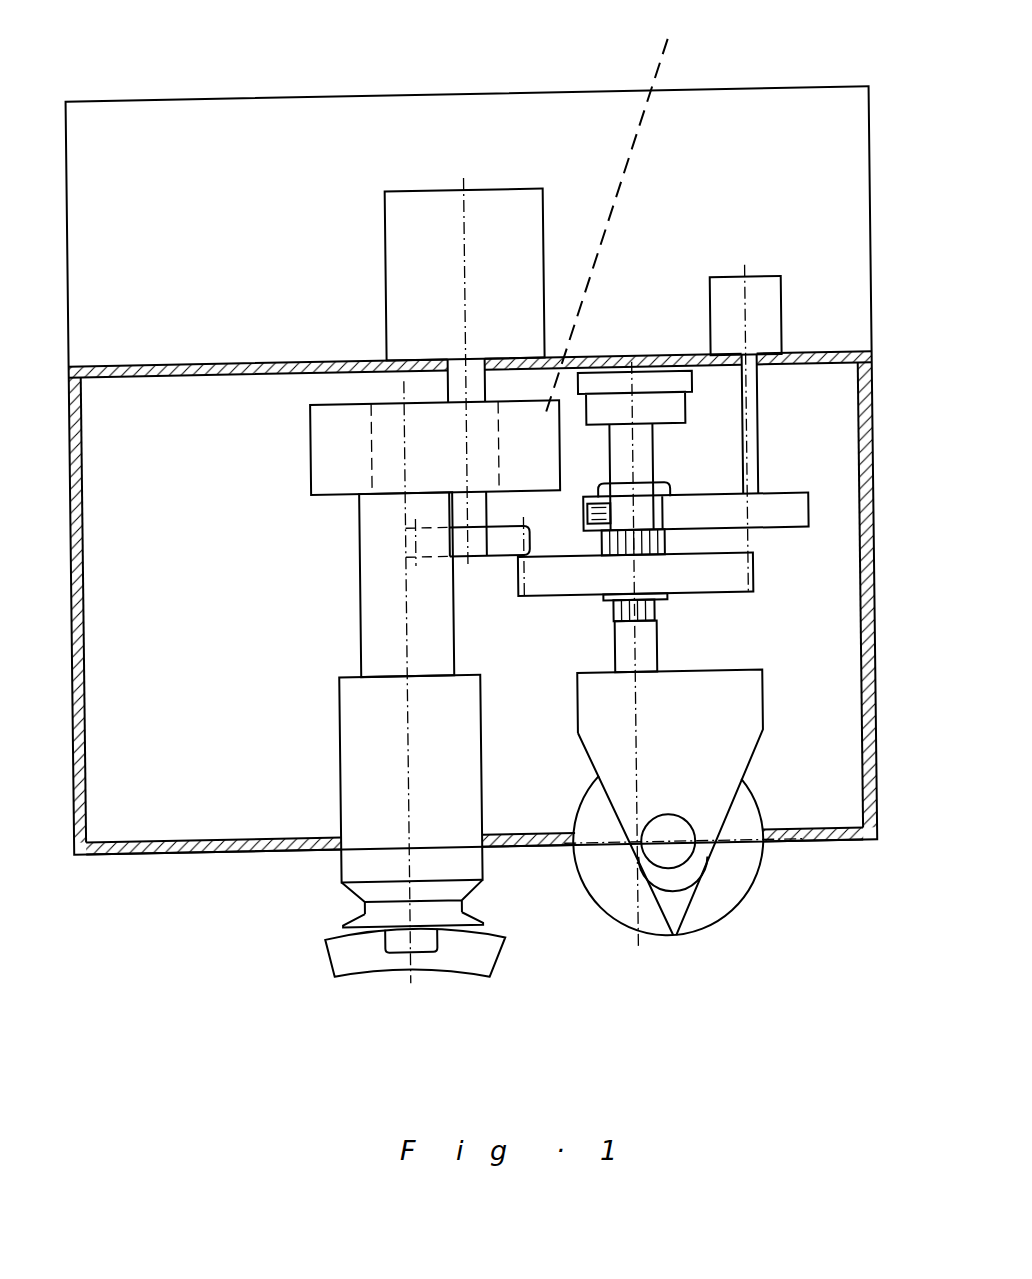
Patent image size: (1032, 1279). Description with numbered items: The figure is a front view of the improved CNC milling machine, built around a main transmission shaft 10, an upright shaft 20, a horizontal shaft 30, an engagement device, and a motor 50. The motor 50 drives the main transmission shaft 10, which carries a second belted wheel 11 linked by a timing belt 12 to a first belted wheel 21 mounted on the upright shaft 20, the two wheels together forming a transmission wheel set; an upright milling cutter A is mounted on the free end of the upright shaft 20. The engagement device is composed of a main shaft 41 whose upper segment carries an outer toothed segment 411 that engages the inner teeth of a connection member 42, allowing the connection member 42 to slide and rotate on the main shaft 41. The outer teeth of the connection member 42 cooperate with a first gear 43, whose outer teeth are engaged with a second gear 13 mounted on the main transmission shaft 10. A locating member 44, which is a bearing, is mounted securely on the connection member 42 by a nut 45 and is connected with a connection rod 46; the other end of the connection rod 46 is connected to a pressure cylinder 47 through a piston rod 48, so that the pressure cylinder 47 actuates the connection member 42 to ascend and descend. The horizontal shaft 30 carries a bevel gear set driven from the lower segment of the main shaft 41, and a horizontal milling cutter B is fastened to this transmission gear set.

The main transmission shaft 10 is at (458, 382).
The second belted wheel 11 is at (616, 206).
The timing belt 12 is at (325, 459).
The first belted wheel 21 is at (354, 458).
The second gear 13 is at (489, 545).
The upright shaft 20 is at (376, 606).
The horizontal shaft 30 is at (679, 856).
The main shaft 41 is at (645, 650).
The outer toothed segment 411 is at (653, 614).
The connection member 42 is at (664, 549).
The first gear 43 is at (569, 582).
The locating member 44 is at (585, 517).
The nut 45 is at (660, 489).
The connection rod 46 is at (808, 519).
The pressure cylinder 47 is at (770, 304).
The piston rod 48 is at (758, 443).
The motor 50 is at (506, 214).
The upright milling cutter A is at (355, 960).
The horizontal milling cutter B is at (697, 918).